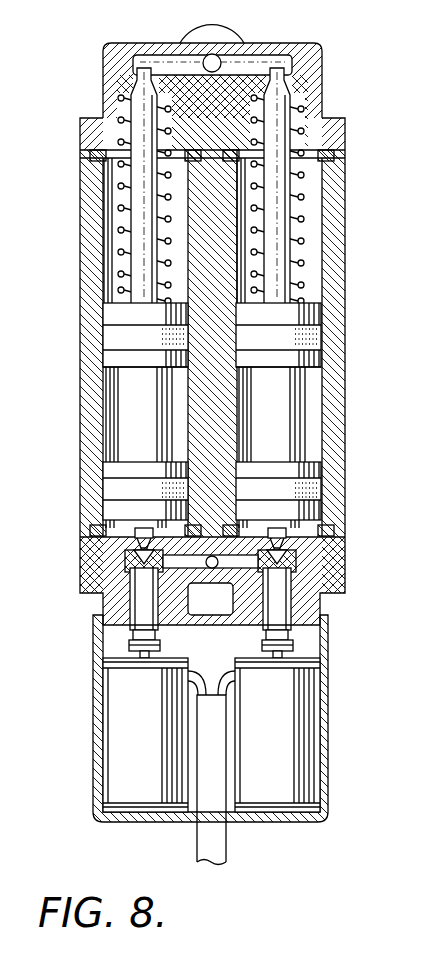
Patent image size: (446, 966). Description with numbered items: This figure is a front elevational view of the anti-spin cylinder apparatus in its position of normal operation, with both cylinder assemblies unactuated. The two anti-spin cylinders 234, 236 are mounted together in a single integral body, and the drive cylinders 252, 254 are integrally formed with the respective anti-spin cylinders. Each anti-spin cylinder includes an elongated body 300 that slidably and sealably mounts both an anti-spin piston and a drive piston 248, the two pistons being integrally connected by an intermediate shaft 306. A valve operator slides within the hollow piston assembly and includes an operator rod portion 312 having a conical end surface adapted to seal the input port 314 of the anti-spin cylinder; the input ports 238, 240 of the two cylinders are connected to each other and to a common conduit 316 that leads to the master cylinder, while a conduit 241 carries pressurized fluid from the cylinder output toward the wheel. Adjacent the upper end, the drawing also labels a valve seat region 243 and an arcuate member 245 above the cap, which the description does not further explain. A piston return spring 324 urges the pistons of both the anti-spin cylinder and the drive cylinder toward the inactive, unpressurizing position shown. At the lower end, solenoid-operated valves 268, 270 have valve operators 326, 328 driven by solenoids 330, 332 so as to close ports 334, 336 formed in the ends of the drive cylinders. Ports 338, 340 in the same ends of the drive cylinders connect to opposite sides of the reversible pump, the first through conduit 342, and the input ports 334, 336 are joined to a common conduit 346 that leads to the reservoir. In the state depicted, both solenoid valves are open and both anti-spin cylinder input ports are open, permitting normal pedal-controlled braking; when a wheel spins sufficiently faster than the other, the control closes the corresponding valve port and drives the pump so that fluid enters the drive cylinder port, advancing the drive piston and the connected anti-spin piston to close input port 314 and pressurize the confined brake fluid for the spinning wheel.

The anti-spin cylinder 234 is at (78, 240).
The anti-spin cylinder 236 is at (348, 219).
The input port 238 is at (108, 74).
The input port 240 is at (323, 76).
The conduit 241 is at (170, 112).
The valve seat 243 is at (260, 98).
The indicator arc 245 is at (232, 36).
The drive piston 248 is at (110, 508).
The drive cylinder 252 is at (76, 523).
The drive cylinder 254 is at (348, 512).
The solenoid-operated valve 268 is at (77, 585).
The solenoid-operated valve 270 is at (348, 584).
The elongated body 300 is at (84, 391).
The intermediate shaft 306 is at (125, 421).
The operator rod portion 312 is at (138, 182).
The input port 314 is at (134, 89).
The common conduit 316 is at (206, 56).
The piston return spring 324 is at (138, 205).
The valve operator 326 is at (140, 560).
The valve operator 328 is at (292, 560).
The solenoid 330 is at (112, 738).
The solenoid 332 is at (310, 742).
The input port 334 is at (140, 540).
The input port 336 is at (295, 542).
The port 338 is at (142, 522).
The port 340 is at (275, 522).
The conduit 342 is at (108, 316).
The common conduit 346 is at (212, 568).